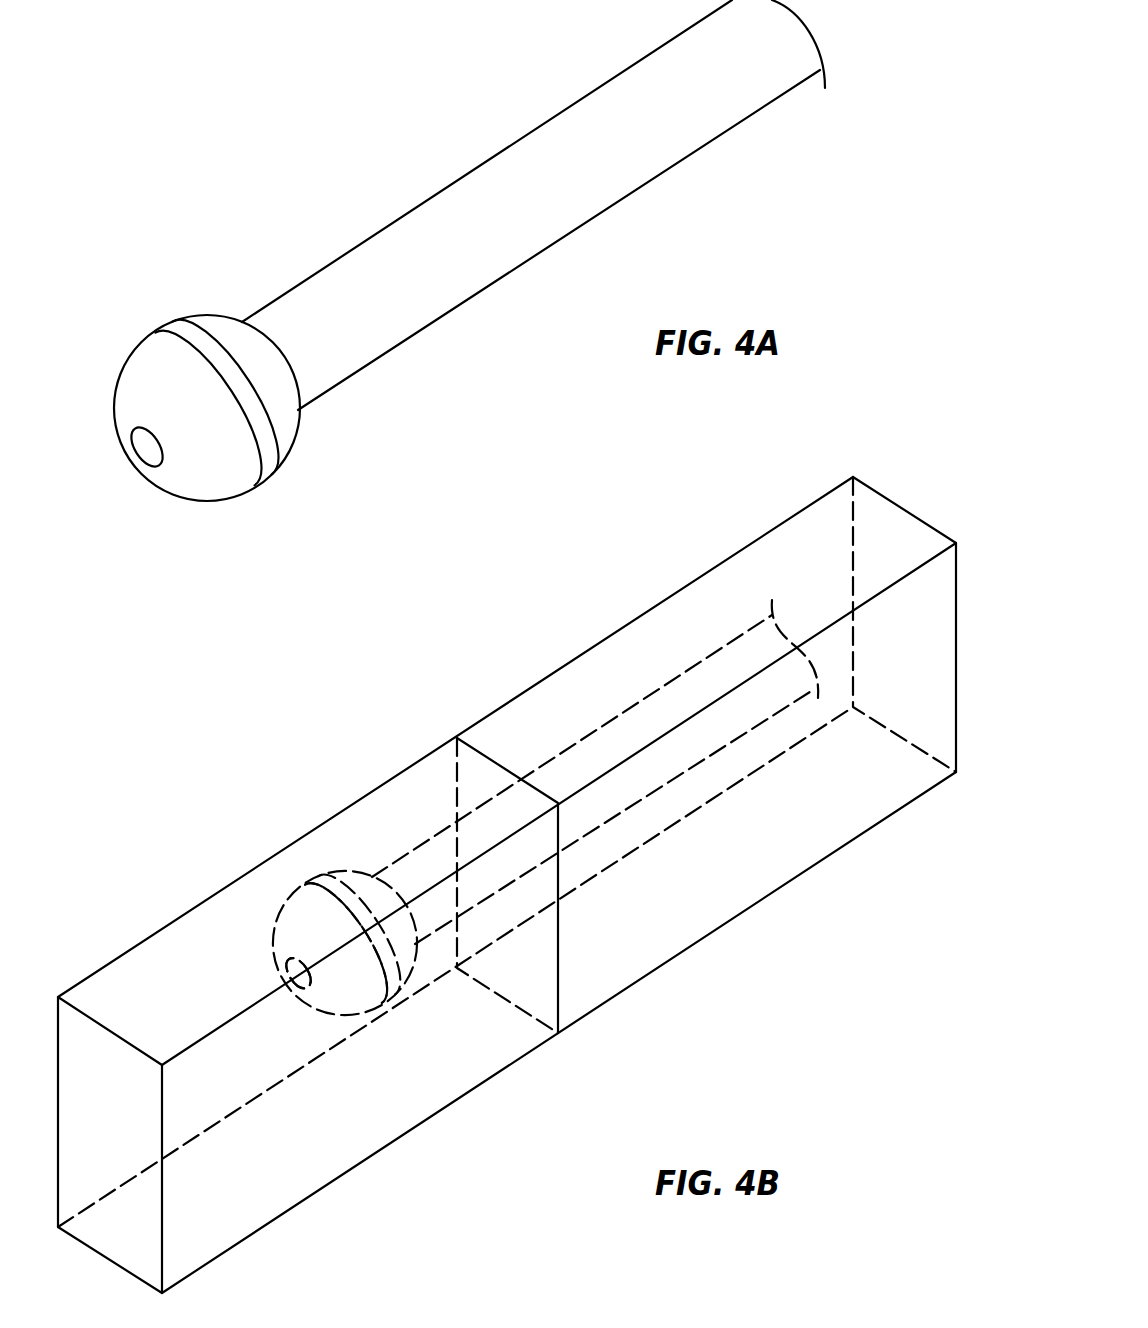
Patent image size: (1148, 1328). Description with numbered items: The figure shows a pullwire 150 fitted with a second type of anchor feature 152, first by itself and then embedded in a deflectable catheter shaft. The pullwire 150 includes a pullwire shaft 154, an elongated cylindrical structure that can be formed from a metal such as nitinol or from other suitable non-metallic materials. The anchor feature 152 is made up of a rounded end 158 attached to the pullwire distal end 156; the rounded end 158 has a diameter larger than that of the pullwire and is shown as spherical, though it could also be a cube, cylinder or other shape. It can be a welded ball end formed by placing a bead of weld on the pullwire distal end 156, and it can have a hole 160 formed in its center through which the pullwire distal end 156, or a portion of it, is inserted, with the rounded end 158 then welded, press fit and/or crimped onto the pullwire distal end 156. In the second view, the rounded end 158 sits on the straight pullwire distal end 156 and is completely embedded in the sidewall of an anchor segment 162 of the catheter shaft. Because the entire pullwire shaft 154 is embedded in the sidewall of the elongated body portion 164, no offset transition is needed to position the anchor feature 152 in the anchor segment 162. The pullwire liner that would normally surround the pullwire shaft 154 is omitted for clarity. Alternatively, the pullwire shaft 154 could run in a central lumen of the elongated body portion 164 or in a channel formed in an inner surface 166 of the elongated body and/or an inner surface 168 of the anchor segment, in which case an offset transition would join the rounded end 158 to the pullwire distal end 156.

In FIG. 4A, the pullwire 150 is at (446, 52).
In FIG. 4B, the pullwire 150 is at (541, 726).
In FIG. 4A, the anchor feature 152 is at (125, 200).
In FIG. 4B, the anchor feature 152 is at (316, 858).
In FIG. 4A, the pullwire shaft 154 is at (563, 207).
In FIG. 4B, the pullwire shaft 154 is at (632, 775).
In FIG. 4A, the pullwire distal end 156 is at (312, 382).
In FIG. 4B, the pullwire distal end 156 is at (433, 914).
In FIG. 4A, the rounded end 158 is at (142, 342).
In FIG. 4A, the hole 160 is at (135, 453).
In FIG. 4B, the anchor segment 162 is at (83, 955).
In FIG. 4B, the elongated body portion 164 is at (781, 500).
In FIG. 4B, the inner surface 166 is at (868, 838).
In FIG. 4B, the inner surface 168 is at (450, 1108).